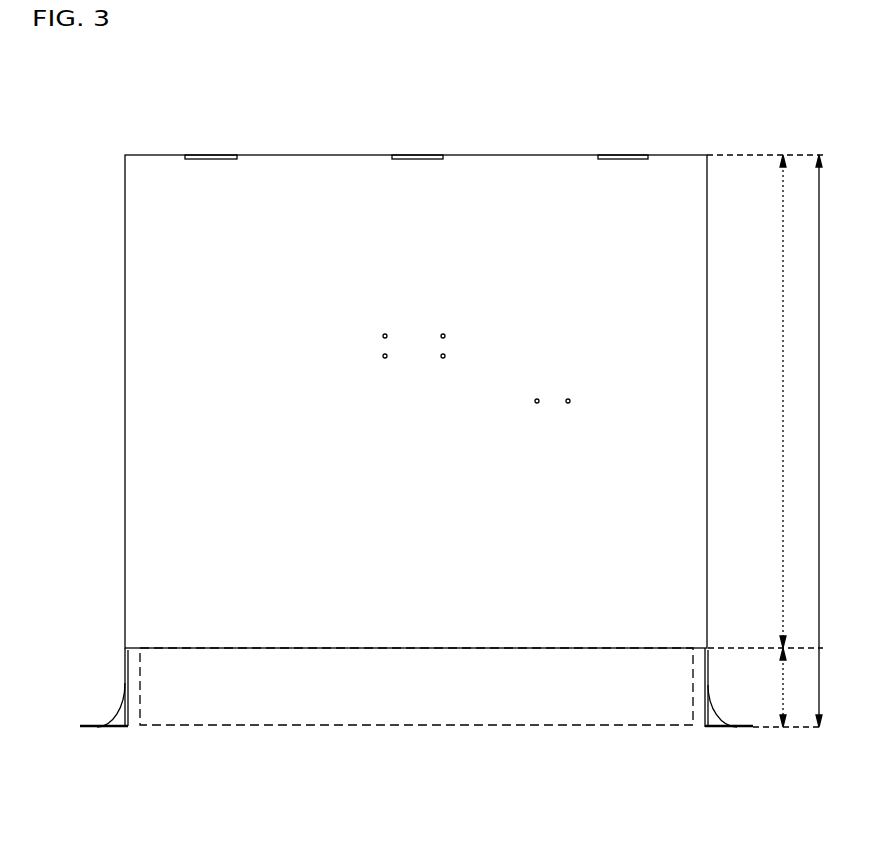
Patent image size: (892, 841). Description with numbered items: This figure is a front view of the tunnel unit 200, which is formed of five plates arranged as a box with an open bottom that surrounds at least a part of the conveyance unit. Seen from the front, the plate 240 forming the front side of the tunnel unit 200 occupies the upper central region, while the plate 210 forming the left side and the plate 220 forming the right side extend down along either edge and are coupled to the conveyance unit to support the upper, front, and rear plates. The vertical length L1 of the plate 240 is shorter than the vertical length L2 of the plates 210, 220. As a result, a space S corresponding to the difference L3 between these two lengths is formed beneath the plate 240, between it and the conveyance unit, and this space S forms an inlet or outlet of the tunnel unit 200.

The tunnel unit 200 is at (146, 83).
The plate forming the front side 240 is at (323, 207).
The plate forming the left side 210 is at (96, 727).
The plate forming the right side 220 is at (737, 727).
The space S is at (415, 726).
The vertical length of the front plate L1 is at (791, 401).
The vertical length of the side plates L2 is at (827, 441).
The difference of the lengths L3 is at (791, 687).